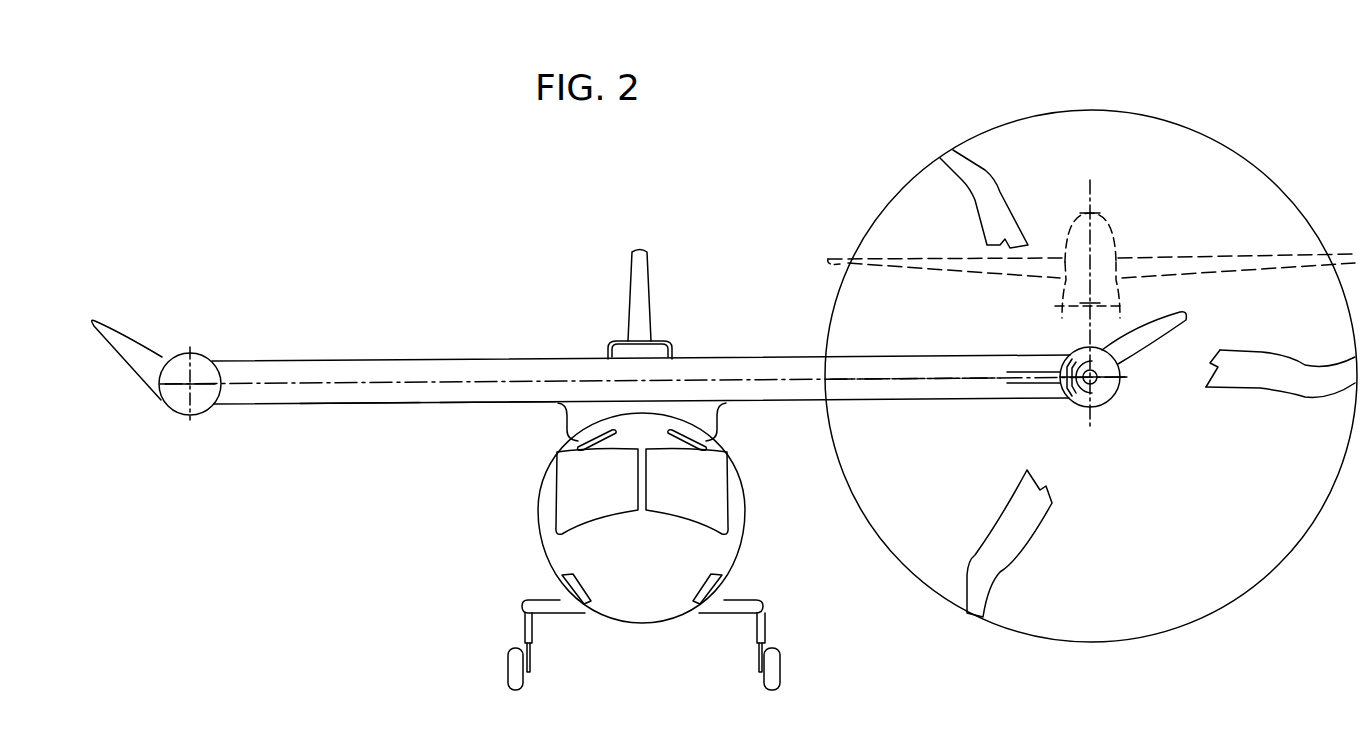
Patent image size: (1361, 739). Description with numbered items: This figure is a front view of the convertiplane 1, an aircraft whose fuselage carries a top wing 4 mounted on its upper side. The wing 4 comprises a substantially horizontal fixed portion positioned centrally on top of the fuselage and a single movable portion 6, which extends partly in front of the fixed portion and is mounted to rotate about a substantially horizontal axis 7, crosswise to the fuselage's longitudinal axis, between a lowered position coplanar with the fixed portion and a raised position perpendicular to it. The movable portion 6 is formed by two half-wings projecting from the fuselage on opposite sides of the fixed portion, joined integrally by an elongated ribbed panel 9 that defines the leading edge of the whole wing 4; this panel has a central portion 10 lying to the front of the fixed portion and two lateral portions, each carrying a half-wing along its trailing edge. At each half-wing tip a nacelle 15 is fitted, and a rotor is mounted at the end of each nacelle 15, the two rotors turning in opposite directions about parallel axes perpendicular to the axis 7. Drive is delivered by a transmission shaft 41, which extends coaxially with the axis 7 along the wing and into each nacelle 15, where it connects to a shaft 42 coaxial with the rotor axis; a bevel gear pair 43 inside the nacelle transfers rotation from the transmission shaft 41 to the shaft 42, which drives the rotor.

The convertiplane 1 is at (462, 229).
The top wing 4 is at (499, 353).
The movable portion 6 is at (404, 410).
The ribbed panel 9 is at (504, 407).
The central portion 10 is at (681, 360).
The nacelle 15 is at (1060, 305).
The horizontal axis 7 is at (879, 386).
The transmission shaft 41 is at (1026, 382).
The shaft 42 is at (1122, 375).
The bevel gear pair 43 is at (1077, 403).